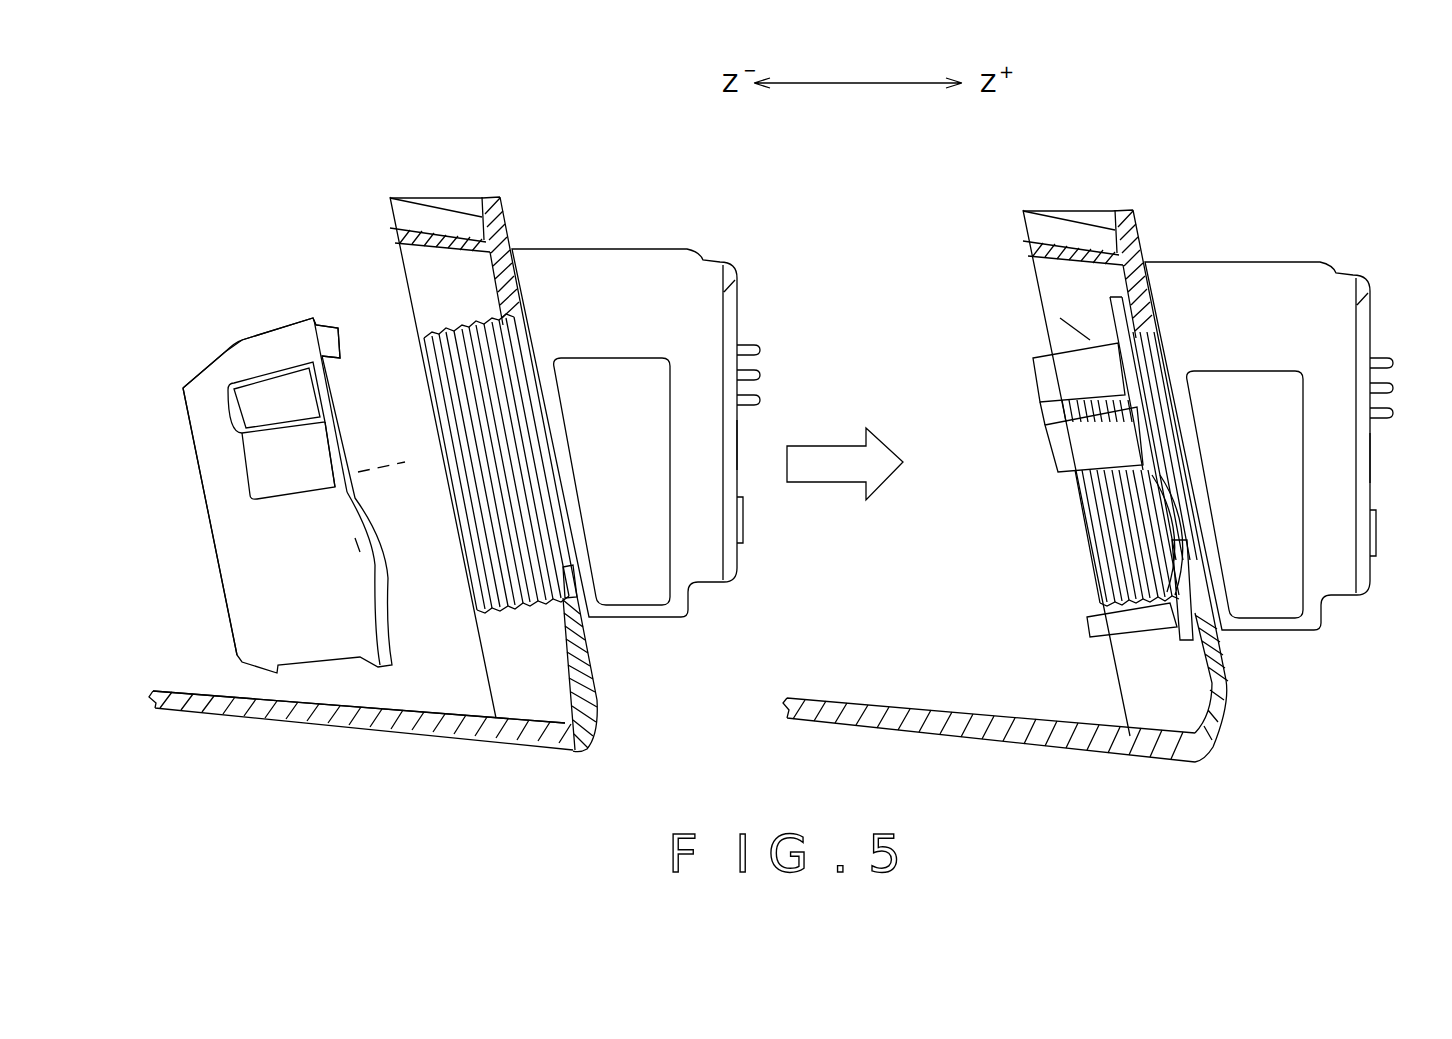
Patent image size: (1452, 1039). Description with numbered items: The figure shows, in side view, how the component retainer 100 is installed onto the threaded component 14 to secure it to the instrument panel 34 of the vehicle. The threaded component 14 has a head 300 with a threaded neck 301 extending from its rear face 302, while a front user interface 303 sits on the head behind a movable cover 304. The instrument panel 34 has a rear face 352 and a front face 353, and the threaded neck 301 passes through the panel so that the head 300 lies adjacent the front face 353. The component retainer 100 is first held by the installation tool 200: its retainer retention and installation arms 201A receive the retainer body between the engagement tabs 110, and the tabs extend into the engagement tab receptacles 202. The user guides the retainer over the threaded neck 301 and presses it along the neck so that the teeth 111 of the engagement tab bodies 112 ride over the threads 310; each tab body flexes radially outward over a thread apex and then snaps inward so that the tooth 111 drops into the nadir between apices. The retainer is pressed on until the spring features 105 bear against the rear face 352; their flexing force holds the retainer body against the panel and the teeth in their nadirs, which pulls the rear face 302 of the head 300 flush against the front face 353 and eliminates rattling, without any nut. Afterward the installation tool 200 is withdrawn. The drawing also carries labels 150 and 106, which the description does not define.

The threaded component 14 is at (640, 220).
The instrument panel 34 is at (605, 724).
The component retainer 100 is at (408, 626).
The spring features 105 is at (385, 553).
The slot wall 106 is at (342, 425).
The engagement tabs 110 is at (258, 452).
The teeth 111 is at (1133, 580).
The engagement tab bodies 112 is at (237, 343).
The connector assembly 150 is at (649, 471).
The installation tool 200 is at (359, 505).
The retainer retention and installation arms 201A is at (265, 398).
The engagement tab receptacles 202 is at (237, 458).
The head 300 is at (665, 623).
The threaded neck 301 is at (508, 612).
The rear face 302 is at (520, 287).
The front user interface 303 is at (725, 330).
The movable cover 304 is at (727, 442).
The threads 310 is at (541, 612).
The rear face 352 is at (485, 275).
The front face 353 is at (600, 668).